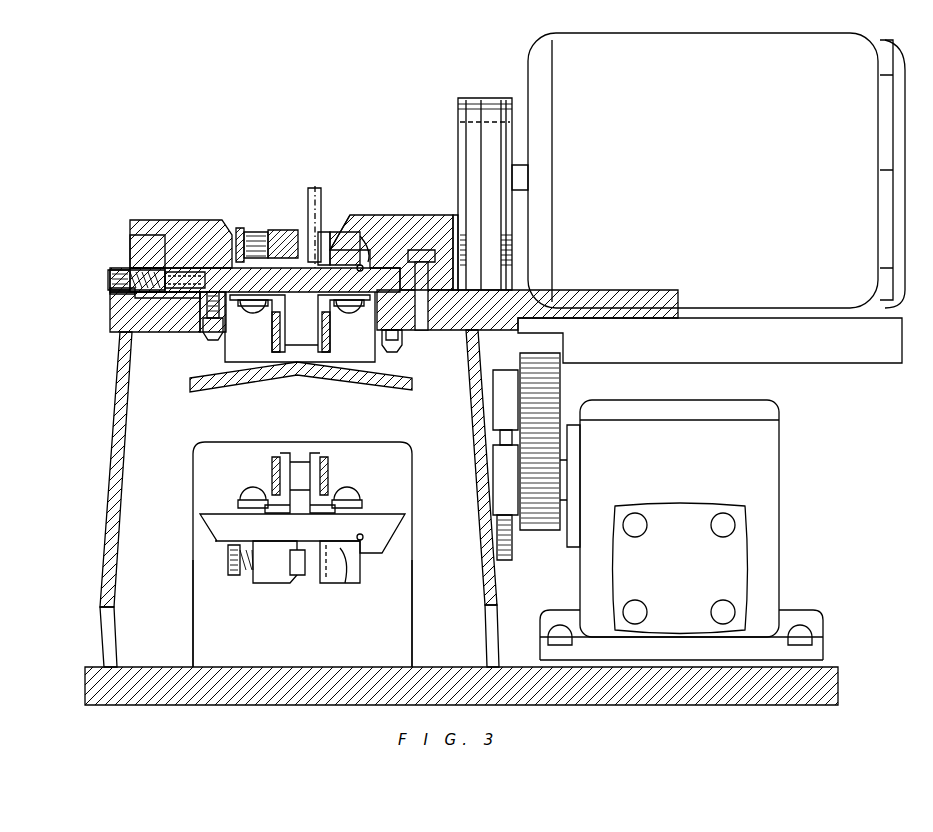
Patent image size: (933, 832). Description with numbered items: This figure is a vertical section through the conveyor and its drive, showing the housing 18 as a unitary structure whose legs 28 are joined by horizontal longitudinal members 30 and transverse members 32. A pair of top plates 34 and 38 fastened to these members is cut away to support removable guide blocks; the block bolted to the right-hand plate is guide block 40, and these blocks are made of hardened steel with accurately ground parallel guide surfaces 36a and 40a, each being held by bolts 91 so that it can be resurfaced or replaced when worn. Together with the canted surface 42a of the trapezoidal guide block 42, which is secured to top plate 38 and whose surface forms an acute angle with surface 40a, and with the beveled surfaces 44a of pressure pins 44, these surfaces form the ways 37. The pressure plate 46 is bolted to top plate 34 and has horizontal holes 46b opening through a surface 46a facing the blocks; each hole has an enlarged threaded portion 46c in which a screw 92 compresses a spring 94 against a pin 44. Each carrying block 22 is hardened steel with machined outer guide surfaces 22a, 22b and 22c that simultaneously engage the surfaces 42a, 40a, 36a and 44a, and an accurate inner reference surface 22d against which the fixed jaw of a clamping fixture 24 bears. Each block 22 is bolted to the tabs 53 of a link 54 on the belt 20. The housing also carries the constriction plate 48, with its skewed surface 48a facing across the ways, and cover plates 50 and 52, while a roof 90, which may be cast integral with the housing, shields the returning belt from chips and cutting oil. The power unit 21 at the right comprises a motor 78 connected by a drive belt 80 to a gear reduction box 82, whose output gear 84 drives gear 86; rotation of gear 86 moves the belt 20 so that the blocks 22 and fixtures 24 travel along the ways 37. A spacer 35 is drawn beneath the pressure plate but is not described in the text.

The housing 18 is at (104, 558).
The belt 20 is at (272, 480).
The power unit 21 is at (852, 380).
The carrying block 22 is at (398, 514).
The outer guide surface 22a is at (392, 546).
The outer guide surface 22b is at (222, 514).
The outer guide surface 22c is at (203, 530).
The inner reference surface 22d is at (352, 578).
The clamping fixture 24 is at (302, 222).
The leg 28 is at (190, 616).
The horizontal longitudinal member 30 is at (128, 348).
The transverse member 32 is at (306, 413).
The top plate 34 is at (128, 318).
The spacer block 35 is at (200, 300).
The guide surface 36a is at (255, 280).
The ways 37 is at (366, 240).
The top plate 38 is at (436, 326).
The guide block 40 is at (360, 305).
The guide surface 40a is at (340, 270).
The trapezoidal guide block 42 is at (391, 252).
The canted surface 42a is at (400, 220).
The pressure pin 44 is at (270, 245).
The beveled surface 44a is at (244, 240).
The pressure plate 46 is at (130, 272).
The surface 46a is at (230, 262).
The horizontal hole 46b is at (166, 294).
The enlarged threaded portion 46c is at (115, 292).
The constriction plate 48 is at (135, 250).
The skewed surface 48a is at (244, 228).
The cover plate 50 is at (194, 222).
The cover plate 52 is at (452, 215).
The tab 53 is at (372, 490).
The link 54 is at (272, 466).
The motor 78 is at (768, 116).
The drive belt 80 is at (490, 168).
The gear reduction box 82 is at (690, 455).
The gear 84 is at (540, 522).
The gear 86 is at (556, 385).
The roof 90 is at (362, 385).
The bolt 91 is at (211, 342).
The screw 92 is at (108, 276).
The spring 94 is at (128, 286).